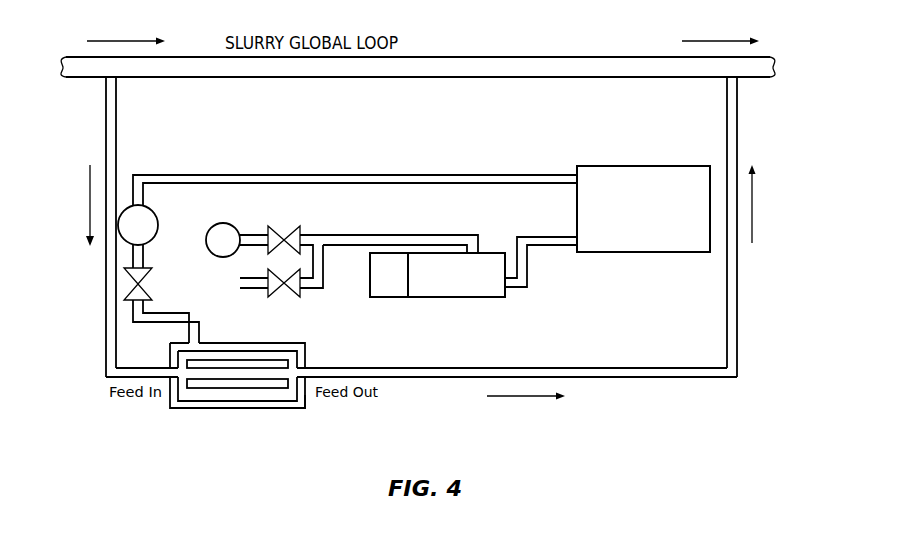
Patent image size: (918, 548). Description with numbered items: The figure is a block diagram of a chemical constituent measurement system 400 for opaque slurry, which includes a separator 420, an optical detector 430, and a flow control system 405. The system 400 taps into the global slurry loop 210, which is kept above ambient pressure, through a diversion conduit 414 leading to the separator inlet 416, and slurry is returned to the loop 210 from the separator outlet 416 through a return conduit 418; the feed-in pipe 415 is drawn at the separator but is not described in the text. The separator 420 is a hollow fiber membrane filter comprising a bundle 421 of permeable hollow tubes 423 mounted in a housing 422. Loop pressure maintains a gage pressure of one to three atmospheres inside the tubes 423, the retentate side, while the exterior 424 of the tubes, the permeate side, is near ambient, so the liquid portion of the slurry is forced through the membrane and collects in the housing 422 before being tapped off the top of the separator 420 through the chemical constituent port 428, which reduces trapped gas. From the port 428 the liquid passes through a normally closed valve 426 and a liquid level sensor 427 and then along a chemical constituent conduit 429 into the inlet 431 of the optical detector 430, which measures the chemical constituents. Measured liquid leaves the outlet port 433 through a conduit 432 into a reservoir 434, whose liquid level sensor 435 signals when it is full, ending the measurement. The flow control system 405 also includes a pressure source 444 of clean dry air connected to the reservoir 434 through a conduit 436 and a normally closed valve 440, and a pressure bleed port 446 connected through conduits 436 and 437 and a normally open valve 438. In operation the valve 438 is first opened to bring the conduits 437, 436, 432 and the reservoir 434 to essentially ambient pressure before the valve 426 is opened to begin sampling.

The global slurry loop 210 is at (470, 57).
The chemical constituent measurement system 400 is at (62, 397).
The flow control system 405 is at (55, 253).
The diversion conduit 414 is at (116, 121).
The feed-in pipe 415 is at (152, 360).
The separator inlet/outlet 416 is at (312, 366).
The return conduit 418 is at (738, 304).
The separator 420 is at (225, 425).
The bundle of hollow tubes 421 is at (299, 416).
The housing 422 is at (185, 409).
The hollow tubes 423 is at (258, 396).
The exterior of tubes 424 is at (290, 353).
The valve 426 is at (148, 278).
The liquid level sensor 427 is at (155, 211).
The chemical constituent port 428 is at (199, 321).
The chemical constituent conduit 429 is at (360, 175).
The optical detector 430 is at (645, 166).
The inlet 431 is at (570, 175).
The chemical constituent conduit 432 is at (537, 247).
The outlet port 433 is at (571, 247).
The reservoir 434 is at (455, 297).
The liquid level sensor 435 is at (388, 297).
The chemical constituent conduit 436 is at (377, 235).
The chemical constituent conduit 437 is at (323, 265).
The valve 438 is at (293, 297).
The valve 440 is at (300, 226).
The pressure source 444 is at (231, 224).
The pressure bleed port 446 is at (249, 292).